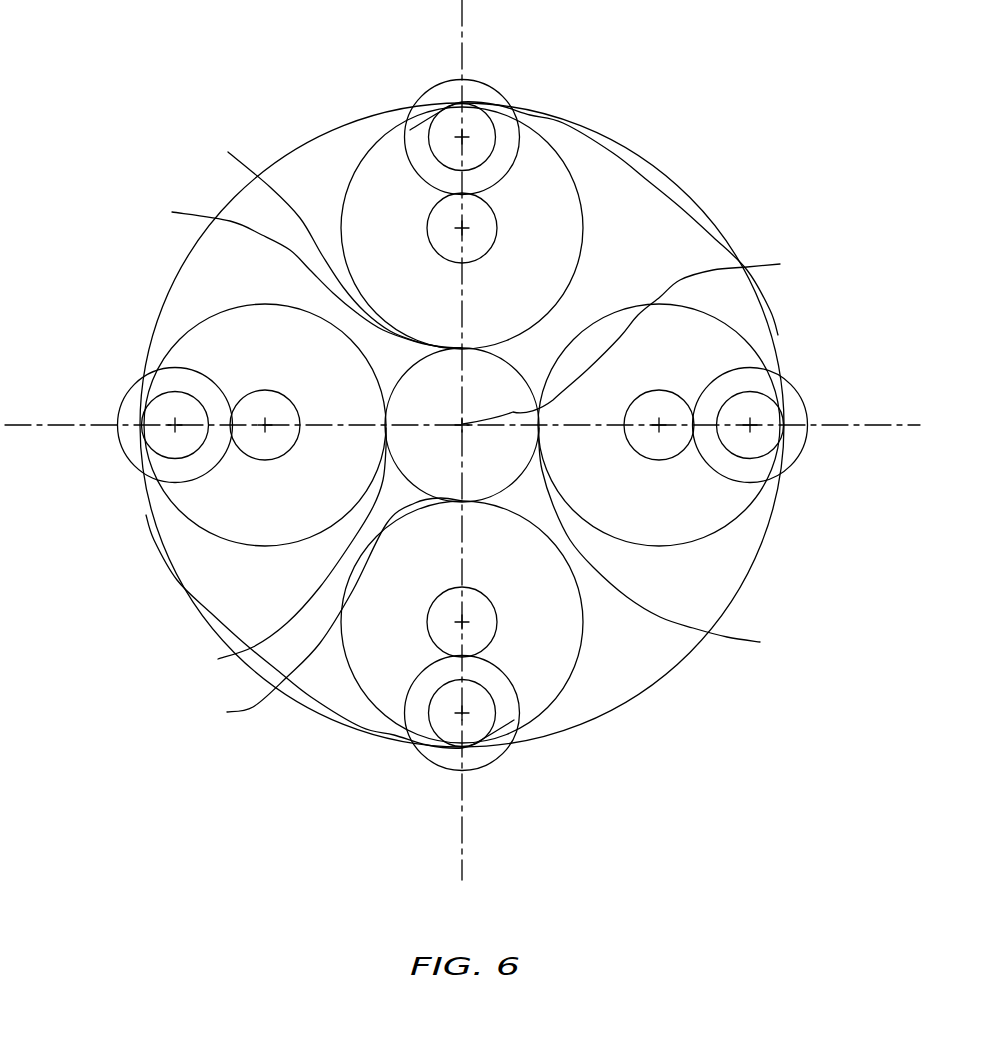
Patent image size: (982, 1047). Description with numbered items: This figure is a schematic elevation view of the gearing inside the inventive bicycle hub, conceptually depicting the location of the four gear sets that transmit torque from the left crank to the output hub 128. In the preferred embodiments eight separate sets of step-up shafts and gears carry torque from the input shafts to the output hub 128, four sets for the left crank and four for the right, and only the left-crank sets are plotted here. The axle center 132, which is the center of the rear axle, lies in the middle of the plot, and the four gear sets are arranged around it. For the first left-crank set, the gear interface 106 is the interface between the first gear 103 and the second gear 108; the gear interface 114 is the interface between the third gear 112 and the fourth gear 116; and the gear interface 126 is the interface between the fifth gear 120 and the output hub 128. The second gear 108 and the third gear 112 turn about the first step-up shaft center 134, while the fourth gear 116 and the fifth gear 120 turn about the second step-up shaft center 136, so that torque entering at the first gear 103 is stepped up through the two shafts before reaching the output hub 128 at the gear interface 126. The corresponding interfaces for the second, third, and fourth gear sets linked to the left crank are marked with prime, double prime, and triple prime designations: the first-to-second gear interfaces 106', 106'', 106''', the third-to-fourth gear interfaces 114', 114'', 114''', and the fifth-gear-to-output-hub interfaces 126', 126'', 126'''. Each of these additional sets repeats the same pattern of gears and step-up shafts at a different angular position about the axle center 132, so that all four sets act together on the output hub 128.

The left first gear 103 is at (312, 137).
The left gear interface 106 is at (490, 63).
The gear interface 106' is at (854, 456).
The gear interface 106'' is at (426, 791).
The gear interface 106''' is at (91, 400).
The left second gear 108 is at (429, 137).
The left third gear 112 is at (444, 81).
The gear interface 114 is at (494, 123).
The gear interface 114' is at (763, 484).
The gear interface 114'' is at (392, 724).
The gear interface 114''' is at (166, 372).
The left fourth gear 116 is at (497, 243).
The left fifth gear 120 is at (583, 263).
The gear interface 126 is at (320, 243).
The gear interface 126' is at (677, 543).
The gear interface 126'' is at (316, 610).
The gear interface 126''' is at (282, 273).
The output hub 128 is at (275, 552).
The axle center 132 is at (639, 339).
The first step-up shaft center 134 is at (470, 134).
The second step-up shaft center 136 is at (463, 228).